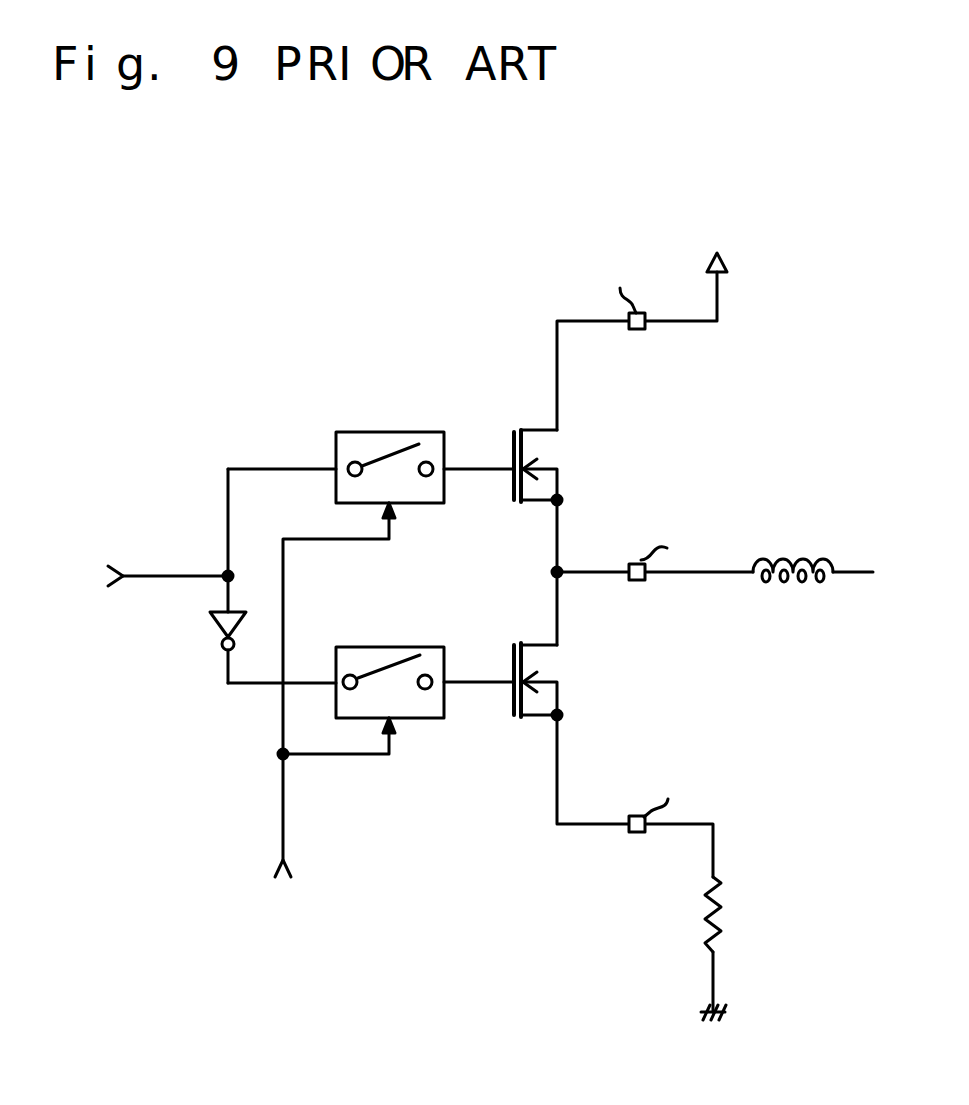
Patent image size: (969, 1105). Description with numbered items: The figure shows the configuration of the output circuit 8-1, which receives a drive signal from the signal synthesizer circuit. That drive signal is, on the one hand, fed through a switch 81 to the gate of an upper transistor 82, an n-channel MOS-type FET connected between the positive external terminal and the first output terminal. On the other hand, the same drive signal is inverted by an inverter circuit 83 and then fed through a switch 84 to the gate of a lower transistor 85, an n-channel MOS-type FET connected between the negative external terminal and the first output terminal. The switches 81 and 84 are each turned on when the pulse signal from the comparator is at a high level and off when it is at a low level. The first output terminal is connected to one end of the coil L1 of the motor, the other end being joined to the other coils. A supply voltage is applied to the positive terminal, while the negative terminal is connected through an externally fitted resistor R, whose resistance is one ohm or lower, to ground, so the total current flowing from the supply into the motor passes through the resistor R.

The output circuit 8-1 is at (412, 279).
The switch 81 is at (406, 440).
The upper transistor 82 is at (562, 449).
The inverter circuit 83 is at (212, 635).
The switch 84 is at (400, 652).
The lower transistor 85 is at (560, 666).
The coil L1 is at (787, 550).
The resistor R is at (733, 912).